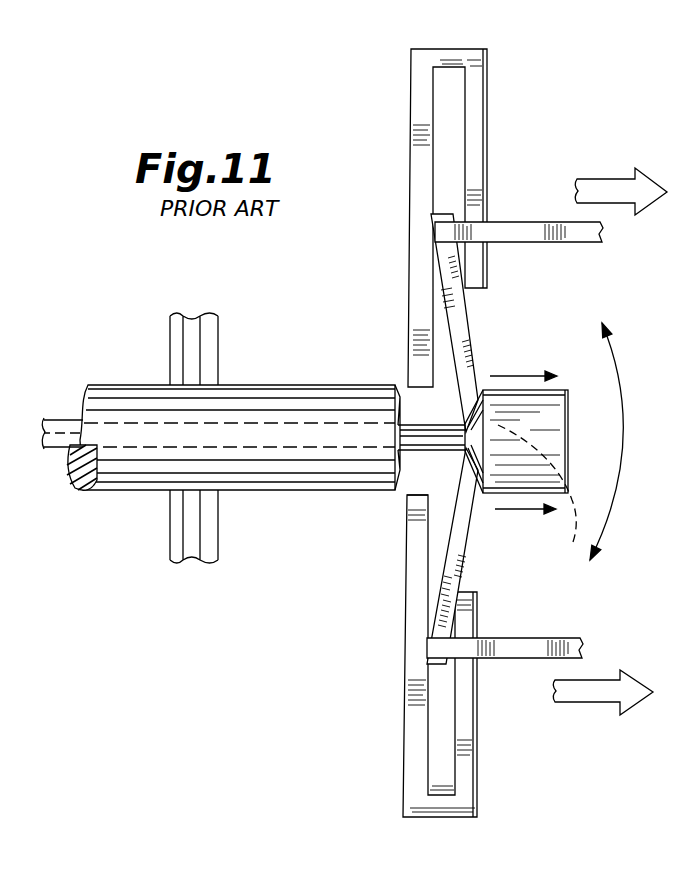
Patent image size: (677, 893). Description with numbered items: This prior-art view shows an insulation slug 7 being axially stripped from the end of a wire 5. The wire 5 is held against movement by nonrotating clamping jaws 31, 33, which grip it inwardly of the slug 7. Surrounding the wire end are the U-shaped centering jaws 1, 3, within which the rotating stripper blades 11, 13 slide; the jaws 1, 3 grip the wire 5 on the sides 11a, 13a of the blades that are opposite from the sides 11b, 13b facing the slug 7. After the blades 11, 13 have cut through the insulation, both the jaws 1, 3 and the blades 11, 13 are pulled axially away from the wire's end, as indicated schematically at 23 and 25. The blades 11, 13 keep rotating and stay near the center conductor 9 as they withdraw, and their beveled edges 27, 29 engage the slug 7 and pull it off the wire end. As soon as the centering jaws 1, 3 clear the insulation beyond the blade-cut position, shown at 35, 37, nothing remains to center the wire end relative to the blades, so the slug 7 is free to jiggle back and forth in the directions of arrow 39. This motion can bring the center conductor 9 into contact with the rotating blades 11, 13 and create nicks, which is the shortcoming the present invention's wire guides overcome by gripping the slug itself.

The centering jaw 1 is at (403, 93).
The centering jaw 3 is at (395, 777).
The wire 5 is at (123, 501).
The slug 7 is at (541, 389).
The center conductor 9 is at (537, 497).
The stripper blade 11 is at (470, 297).
The side of stripper blade 11a is at (450, 314).
The side of stripper blade 11b is at (470, 328).
The stripper blade 13 is at (467, 568).
The side of stripper blade 13a is at (438, 578).
The side of stripper blade 13b is at (465, 542).
The axial pulling direction 23 is at (607, 181).
The axial pulling direction 25 is at (593, 701).
The beveled edge 27 is at (478, 402).
The beveled edge 29 is at (486, 478).
The clamping jaw 31 is at (218, 338).
The clamping jaw 33 is at (212, 547).
The blade-cut position 35 is at (410, 397).
The blade-cut position 37 is at (408, 490).
The arrow 39 is at (625, 427).